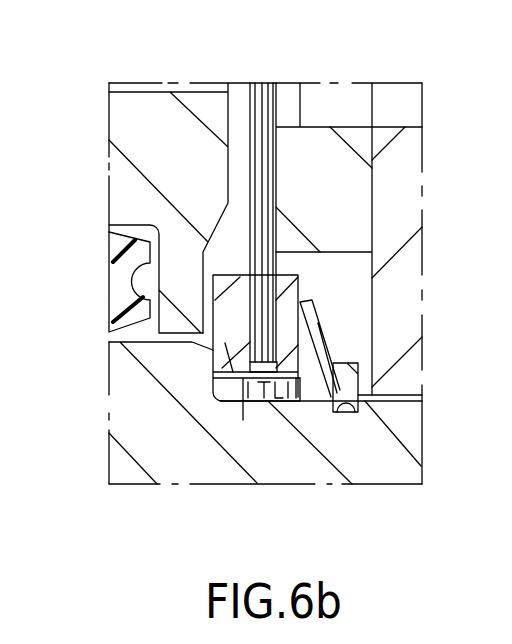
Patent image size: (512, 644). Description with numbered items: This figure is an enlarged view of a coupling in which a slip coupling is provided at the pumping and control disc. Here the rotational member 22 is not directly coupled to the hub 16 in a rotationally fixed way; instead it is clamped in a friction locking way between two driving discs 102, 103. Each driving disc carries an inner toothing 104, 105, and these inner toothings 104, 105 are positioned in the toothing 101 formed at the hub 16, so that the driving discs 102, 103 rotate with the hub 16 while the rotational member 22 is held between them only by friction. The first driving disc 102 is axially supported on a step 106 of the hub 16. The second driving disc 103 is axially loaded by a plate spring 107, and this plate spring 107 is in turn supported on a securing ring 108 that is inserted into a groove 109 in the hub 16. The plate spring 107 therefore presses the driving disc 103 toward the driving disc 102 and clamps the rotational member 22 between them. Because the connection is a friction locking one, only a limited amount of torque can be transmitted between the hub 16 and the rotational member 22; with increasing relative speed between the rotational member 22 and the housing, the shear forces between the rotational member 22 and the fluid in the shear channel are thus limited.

The hub 16 is at (117, 403).
The rotational member 22 is at (262, 83).
The toothing 101 is at (263, 398).
The driving disc 102 is at (205, 349).
The driving disc 103 is at (313, 398).
The inner toothing 104 is at (228, 372).
The inner toothing 105 is at (280, 396).
The step 106 is at (205, 349).
The plate spring 107 is at (331, 398).
The securing ring 108 is at (352, 382).
The groove 109 is at (352, 404).